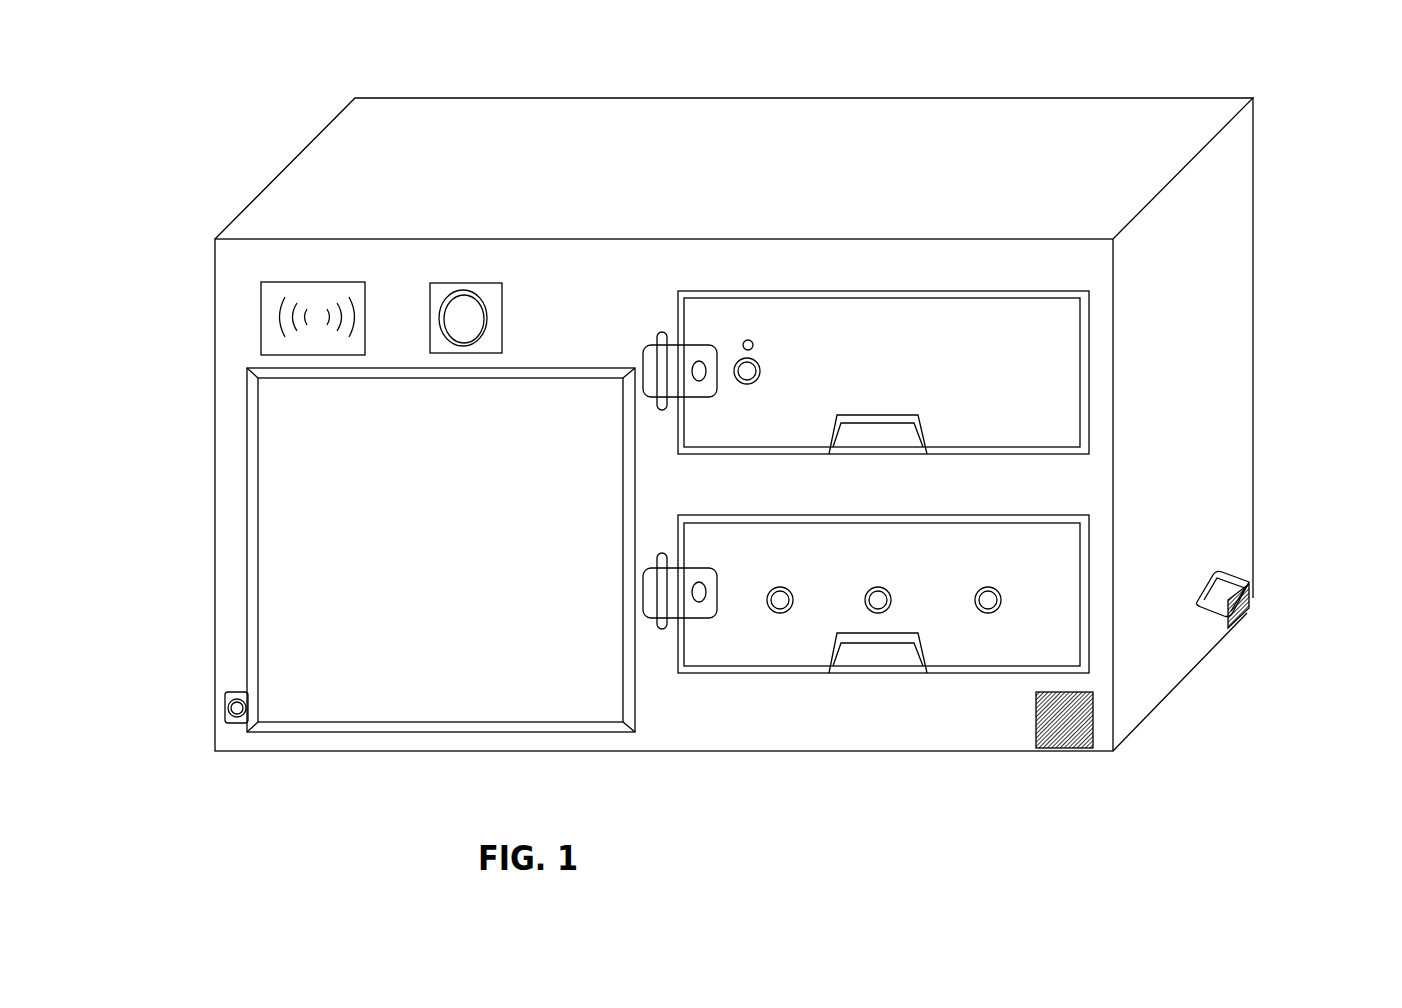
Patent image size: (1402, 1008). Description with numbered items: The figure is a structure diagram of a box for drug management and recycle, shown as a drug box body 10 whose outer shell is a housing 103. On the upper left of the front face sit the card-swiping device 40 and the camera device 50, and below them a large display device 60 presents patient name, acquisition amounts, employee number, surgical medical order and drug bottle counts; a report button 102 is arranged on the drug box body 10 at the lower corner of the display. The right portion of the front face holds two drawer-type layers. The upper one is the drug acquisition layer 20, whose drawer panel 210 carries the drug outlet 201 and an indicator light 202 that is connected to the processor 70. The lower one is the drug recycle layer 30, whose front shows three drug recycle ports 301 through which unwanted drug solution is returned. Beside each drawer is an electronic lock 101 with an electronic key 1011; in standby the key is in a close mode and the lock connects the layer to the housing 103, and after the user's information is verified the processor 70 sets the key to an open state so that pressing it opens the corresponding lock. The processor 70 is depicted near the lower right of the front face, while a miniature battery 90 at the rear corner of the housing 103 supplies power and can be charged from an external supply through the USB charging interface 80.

The drug box body 10 is at (370, 123).
The housing 103 is at (1211, 215).
The card-swiping device 40 is at (312, 282).
The camera device 50 is at (467, 283).
The display device 60 is at (263, 592).
The report button 102 is at (227, 705).
The drug acquisition layer 20 is at (939, 311).
The drawer panel 210 is at (942, 325).
The drug outlet 201 is at (738, 358).
The indicator light 202 is at (752, 340).
The drug recycle layer 30 is at (876, 676).
The drug recycle port 301 is at (980, 611).
The electronic lock 101 is at (695, 600).
The electronic key 1011 is at (666, 608).
The processor 70 is at (1070, 745).
The USB charging interface 80 is at (1242, 627).
The battery 90 is at (1217, 576).